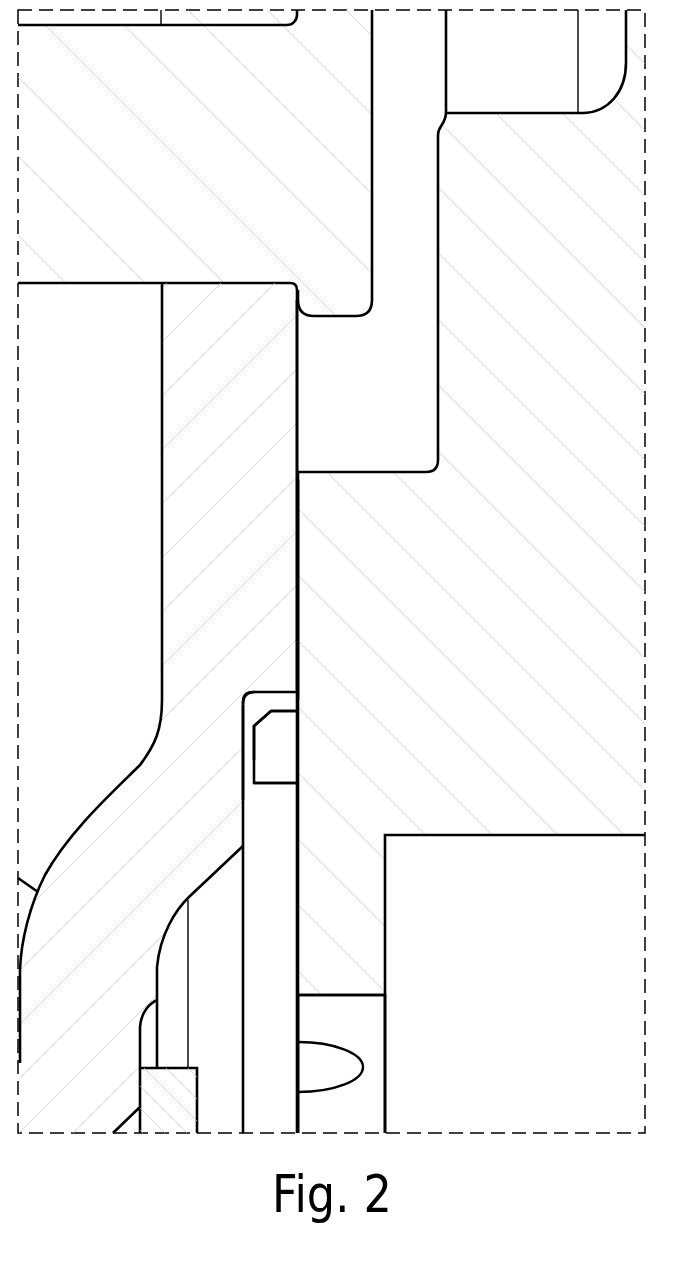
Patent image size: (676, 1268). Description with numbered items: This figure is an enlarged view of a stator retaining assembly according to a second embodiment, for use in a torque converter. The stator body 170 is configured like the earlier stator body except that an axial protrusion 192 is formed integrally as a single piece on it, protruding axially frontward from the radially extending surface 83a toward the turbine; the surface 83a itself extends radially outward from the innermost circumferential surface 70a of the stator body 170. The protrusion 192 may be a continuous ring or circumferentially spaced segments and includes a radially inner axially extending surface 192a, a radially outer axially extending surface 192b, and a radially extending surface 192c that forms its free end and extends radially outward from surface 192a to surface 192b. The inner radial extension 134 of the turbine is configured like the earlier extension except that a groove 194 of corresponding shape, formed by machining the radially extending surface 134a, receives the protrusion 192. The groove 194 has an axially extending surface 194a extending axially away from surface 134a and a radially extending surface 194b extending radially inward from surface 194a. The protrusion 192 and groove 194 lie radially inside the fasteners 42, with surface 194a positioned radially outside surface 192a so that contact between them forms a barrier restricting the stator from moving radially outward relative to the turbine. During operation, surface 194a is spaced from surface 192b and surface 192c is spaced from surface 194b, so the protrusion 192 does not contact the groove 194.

The fasteners 42 is at (326, 163).
The inner radial extension 134 is at (263, 442).
The radially extending surface 134a is at (297, 368).
The stator body 170 is at (541, 549).
The radially extending surface 83a is at (300, 602).
The axial protrusion 192 is at (284, 757).
The radially inner axially extending surface 192a is at (280, 788).
The radially outer axially extending surface 192b is at (298, 702).
The radially extending surface 192c is at (257, 733).
The groove 194 is at (241, 683).
The axially extending surface 194a is at (275, 690).
The radially extending surface 194b is at (244, 740).
The innermost circumferential surface 70a is at (352, 995).